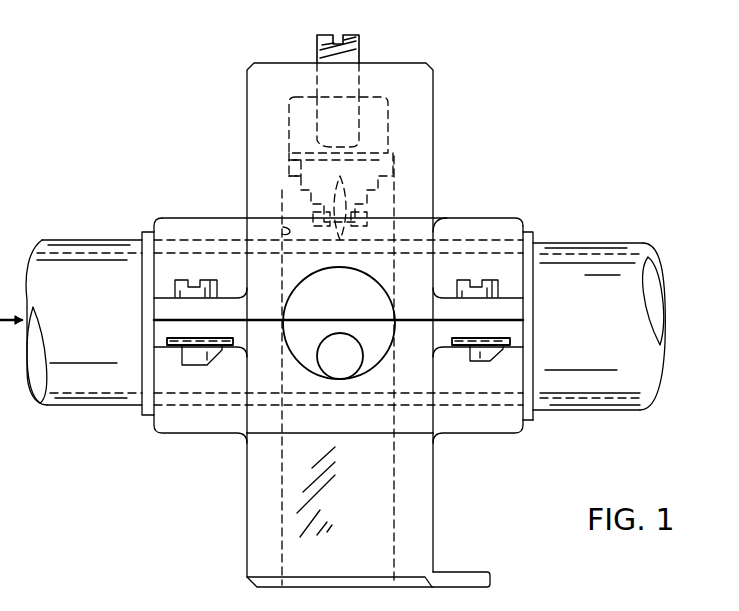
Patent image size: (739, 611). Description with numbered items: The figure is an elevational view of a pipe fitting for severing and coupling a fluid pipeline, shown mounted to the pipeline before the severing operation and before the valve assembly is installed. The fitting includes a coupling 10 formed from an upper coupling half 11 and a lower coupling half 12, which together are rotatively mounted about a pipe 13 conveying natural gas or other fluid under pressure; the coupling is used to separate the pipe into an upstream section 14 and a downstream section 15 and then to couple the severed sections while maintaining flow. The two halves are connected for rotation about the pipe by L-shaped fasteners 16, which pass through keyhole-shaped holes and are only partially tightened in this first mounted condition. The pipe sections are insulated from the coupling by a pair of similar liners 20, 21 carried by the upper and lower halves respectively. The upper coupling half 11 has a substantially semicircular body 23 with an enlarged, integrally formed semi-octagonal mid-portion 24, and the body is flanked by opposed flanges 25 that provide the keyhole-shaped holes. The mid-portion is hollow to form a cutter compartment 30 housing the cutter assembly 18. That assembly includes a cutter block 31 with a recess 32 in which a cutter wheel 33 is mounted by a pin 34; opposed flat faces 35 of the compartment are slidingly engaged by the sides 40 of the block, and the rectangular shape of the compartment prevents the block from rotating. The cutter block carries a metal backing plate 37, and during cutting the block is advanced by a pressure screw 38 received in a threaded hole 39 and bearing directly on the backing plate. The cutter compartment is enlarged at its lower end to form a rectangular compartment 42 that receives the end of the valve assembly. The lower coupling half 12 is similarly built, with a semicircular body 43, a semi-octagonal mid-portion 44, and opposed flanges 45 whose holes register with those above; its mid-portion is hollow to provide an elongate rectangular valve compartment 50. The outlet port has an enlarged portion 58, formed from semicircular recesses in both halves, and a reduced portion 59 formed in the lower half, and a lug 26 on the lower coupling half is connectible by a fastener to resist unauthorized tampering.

The coupling 10 is at (496, 217).
The upper coupling half 11 is at (180, 218).
The lower coupling half 12 is at (167, 433).
The pipe 13 is at (607, 244).
The upstream section 14 is at (76, 405).
The downstream section 15 is at (615, 413).
The L-shaped fastener 16 is at (173, 284).
The cutter assembly 18 is at (397, 152).
The liner 20 is at (532, 233).
The liner 21 is at (531, 423).
The semicircular body 23 is at (180, 218).
The semi-octagonal mid-portion 24 is at (247, 94).
The flange 25 is at (153, 310).
The lug 26 is at (468, 573).
The cutter compartment 30 is at (389, 126).
The cutter block 31 is at (348, 184).
The recess 32 is at (356, 207).
The cutter wheel 33 is at (333, 203).
The pin 34 is at (340, 214).
The flat face 35 is at (293, 178).
The metal backing plate 37 is at (298, 148).
The pressure screw 38 is at (359, 45).
The threaded hole 39 is at (316, 84).
The side 40 is at (288, 159).
The rectangular compartment 42 is at (280, 231).
The semicircular body 43 is at (198, 433).
The semi-octagonal mid-portion 44 is at (247, 497).
The flange 45 is at (153, 333).
The valve compartment 50 is at (282, 534).
The enlarged portion 58 is at (386, 294).
The reduced portion 59 is at (326, 340).